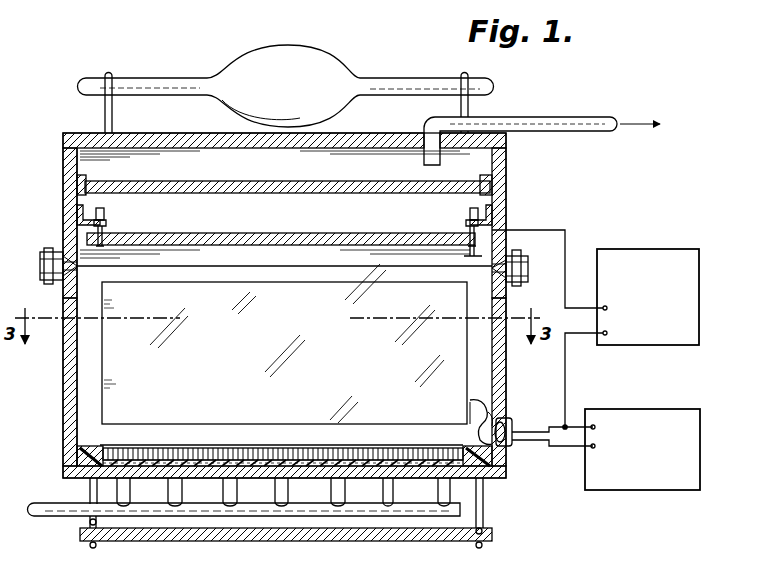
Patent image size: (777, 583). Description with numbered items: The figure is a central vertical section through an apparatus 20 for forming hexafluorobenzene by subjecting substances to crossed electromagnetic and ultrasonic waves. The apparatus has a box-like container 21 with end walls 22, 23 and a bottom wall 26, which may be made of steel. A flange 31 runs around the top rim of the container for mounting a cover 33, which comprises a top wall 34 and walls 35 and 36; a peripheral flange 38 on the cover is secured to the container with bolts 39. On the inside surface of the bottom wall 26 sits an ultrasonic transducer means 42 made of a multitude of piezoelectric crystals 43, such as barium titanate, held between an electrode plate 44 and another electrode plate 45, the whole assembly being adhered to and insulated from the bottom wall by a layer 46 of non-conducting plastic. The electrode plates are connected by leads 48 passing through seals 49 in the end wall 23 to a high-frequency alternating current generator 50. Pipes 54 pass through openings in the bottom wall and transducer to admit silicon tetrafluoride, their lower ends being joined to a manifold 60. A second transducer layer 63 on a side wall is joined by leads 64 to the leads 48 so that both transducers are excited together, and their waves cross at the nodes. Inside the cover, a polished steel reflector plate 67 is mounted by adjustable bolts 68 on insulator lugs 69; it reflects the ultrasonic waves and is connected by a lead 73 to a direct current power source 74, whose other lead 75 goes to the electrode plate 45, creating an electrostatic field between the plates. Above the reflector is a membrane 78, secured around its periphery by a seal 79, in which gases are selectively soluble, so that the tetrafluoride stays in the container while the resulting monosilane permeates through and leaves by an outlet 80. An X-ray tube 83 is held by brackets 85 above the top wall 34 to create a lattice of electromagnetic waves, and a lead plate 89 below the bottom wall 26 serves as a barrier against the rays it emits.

The apparatus 20 is at (73, 106).
The container 21 is at (62, 394).
The end wall 22 is at (62, 410).
The end wall 23 is at (506, 366).
The bottom wall 26 is at (82, 468).
The flange 31 is at (532, 277).
The cover 33 is at (62, 155).
The top wall 34 is at (354, 134).
The wall of cover 35 is at (77, 195).
The wall of cover 36 is at (506, 161).
The peripheral flange 38 is at (44, 254).
The bolts 39 is at (44, 282).
The ultrasonic transducer means 42 is at (226, 444).
The piezoelectric crystals 43 is at (160, 446).
The electrode plate 44 is at (266, 448).
The electrode plate 45 is at (330, 450).
The layer of non-conducting material 46 is at (82, 453).
The leads 48 is at (538, 440).
The seals 49 is at (504, 420).
The high-frequency alternating current generator 50 is at (700, 416).
The pipes 54 is at (480, 502).
The manifold 60 is at (56, 516).
The transducer layer 63 is at (284, 344).
The leads 64 is at (470, 404).
The reflector plate 67 is at (292, 247).
The adjustable fasteners or bolts 68 is at (464, 248).
The insulator lugs 69 is at (106, 222).
The lead 73 is at (565, 230).
The direct current power source 74 is at (694, 256).
The lead 75 is at (565, 372).
The membrane or sheet 78 is at (332, 181).
The seal 79 is at (482, 184).
The outlet 80 is at (576, 117).
The X-ray tube 83 is at (292, 58).
The brackets 85 is at (112, 108).
The lead plate 89 is at (340, 541).